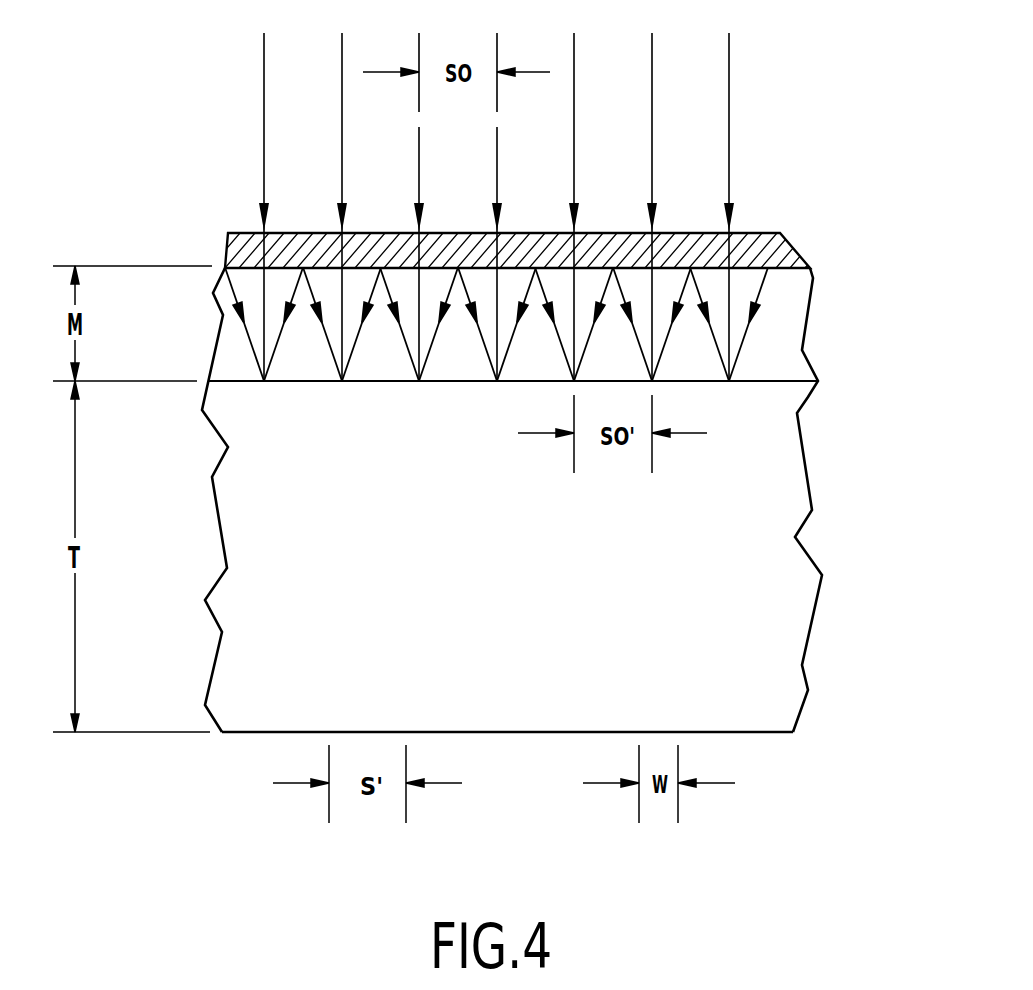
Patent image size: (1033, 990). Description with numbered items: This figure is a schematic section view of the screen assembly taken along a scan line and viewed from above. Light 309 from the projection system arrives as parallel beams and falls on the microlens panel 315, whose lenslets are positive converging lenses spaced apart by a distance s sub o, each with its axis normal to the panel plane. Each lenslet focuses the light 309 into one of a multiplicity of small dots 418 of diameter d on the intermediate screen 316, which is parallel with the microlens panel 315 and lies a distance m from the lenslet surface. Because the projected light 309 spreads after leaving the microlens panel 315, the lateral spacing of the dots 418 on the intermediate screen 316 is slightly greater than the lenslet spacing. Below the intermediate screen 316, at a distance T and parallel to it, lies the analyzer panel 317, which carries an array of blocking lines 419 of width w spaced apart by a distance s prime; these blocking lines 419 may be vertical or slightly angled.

The light 309 is at (729, 100).
The microlens panel 315 is at (775, 253).
The intermediate screen 316 is at (760, 381).
The analyzer panel 317 is at (527, 732).
The dots 418 is at (342, 381).
The blocking lines 419 is at (698, 732).